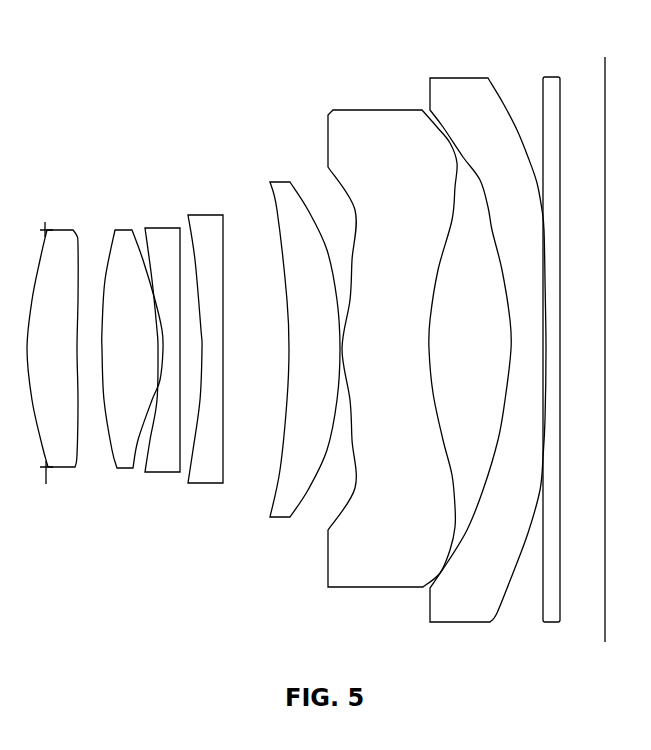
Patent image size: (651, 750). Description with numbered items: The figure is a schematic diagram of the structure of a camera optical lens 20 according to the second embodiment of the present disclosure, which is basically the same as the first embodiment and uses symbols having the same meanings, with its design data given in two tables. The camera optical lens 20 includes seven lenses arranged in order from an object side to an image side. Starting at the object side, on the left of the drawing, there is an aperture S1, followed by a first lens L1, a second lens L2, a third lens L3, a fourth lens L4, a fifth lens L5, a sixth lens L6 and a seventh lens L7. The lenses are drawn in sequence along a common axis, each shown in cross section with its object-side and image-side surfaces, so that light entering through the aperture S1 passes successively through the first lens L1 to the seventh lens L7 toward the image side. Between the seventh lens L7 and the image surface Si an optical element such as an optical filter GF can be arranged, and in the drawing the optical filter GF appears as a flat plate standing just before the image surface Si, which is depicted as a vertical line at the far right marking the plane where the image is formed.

The camera optical lens 20 is at (332, 58).
The aperture S1 is at (36, 347).
The first lens L1 is at (53, 335).
The second lens L2 is at (132, 337).
The third lens L3 is at (162, 339).
The fourth lens L4 is at (205, 337).
The fifth lens L5 is at (305, 338).
The sixth lens L6 is at (392, 337).
The seventh lens L7 is at (488, 338).
The optical filter GF is at (556, 338).
The image surface Si is at (609, 337).